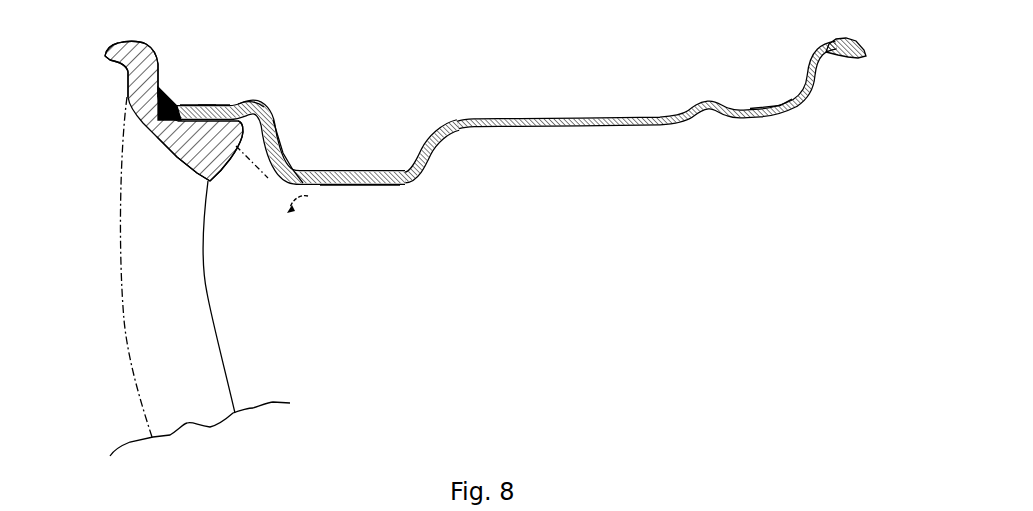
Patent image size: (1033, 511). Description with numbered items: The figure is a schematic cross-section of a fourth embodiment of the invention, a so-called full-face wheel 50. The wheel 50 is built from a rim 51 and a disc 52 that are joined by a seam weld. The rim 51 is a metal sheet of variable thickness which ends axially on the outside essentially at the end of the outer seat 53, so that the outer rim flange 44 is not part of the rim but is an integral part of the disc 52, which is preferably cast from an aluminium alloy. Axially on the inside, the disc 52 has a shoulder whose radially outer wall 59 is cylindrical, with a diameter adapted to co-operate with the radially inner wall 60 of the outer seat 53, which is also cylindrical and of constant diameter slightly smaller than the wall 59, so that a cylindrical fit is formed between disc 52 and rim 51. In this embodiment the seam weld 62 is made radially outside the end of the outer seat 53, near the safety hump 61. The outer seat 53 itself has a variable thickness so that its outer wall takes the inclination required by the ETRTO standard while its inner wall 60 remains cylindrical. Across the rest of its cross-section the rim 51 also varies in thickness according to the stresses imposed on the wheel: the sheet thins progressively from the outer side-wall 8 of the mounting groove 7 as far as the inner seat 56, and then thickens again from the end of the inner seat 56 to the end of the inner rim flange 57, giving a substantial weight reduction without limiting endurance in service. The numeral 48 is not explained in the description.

The mounting groove 7 is at (350, 176).
The outer side-wall 8 is at (277, 135).
The outer rim flange 44 is at (107, 53).
The tire bead 48 is at (188, 123).
The wheel 50 is at (575, 250).
The rim 51 is at (527, 146).
The disc 52 is at (177, 376).
The outer seat 53 is at (214, 108).
The inner seat 56 is at (770, 113).
The inner rim flange 57 is at (823, 46).
The radially outer wall 59 is at (224, 140).
The radially inner wall 60 is at (203, 119).
The safety hump 61 is at (250, 107).
The seam weld 62 is at (176, 118).